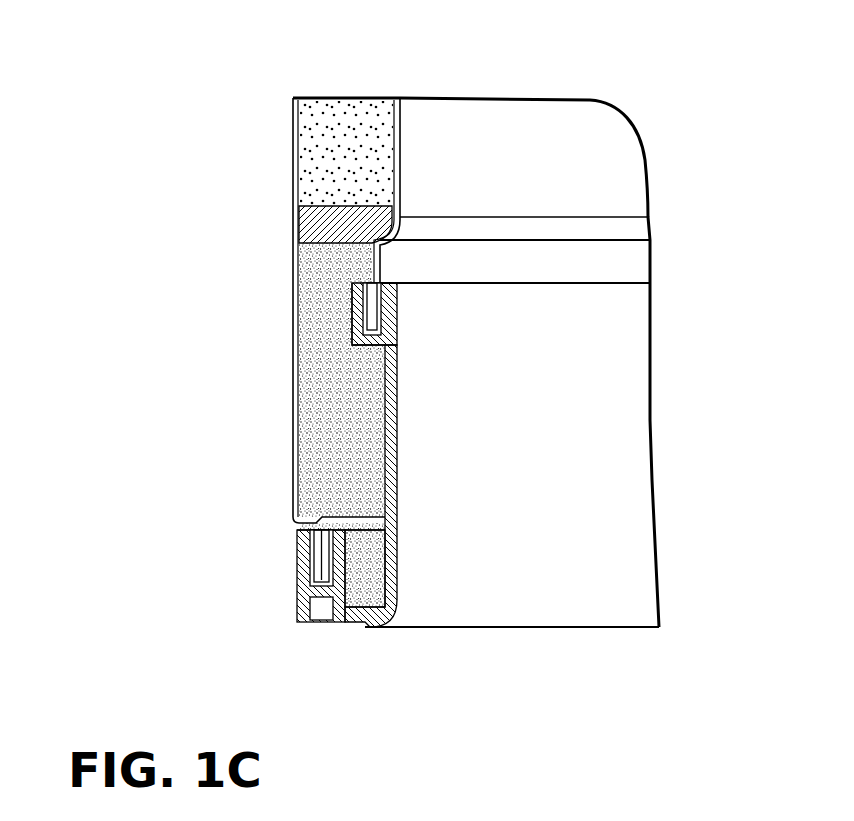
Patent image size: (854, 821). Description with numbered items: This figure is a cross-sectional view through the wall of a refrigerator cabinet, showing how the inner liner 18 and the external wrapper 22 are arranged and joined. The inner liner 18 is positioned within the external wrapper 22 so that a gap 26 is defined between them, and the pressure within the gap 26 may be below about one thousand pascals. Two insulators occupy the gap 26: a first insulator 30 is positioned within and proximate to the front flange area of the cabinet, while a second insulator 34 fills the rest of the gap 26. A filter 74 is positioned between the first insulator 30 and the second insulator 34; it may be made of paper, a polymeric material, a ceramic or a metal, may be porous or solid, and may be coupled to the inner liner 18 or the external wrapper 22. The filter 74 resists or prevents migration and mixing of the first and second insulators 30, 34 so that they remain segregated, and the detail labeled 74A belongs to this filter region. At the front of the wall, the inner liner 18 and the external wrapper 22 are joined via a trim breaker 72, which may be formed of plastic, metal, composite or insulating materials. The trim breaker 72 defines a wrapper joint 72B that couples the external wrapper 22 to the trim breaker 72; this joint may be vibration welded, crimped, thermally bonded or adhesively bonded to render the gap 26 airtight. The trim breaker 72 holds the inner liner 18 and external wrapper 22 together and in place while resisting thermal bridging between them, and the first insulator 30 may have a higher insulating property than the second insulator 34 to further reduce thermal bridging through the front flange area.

The inner liner 18 is at (400, 148).
The second insulator 34 is at (337, 150).
The external wrapper 22 is at (290, 236).
The filter 74 is at (325, 258).
The bracket channel 74A is at (352, 318).
The first insulator 30 is at (330, 422).
The gap 26 is at (340, 475).
The trim breaker 72 is at (331, 618).
The wrapper joint 72B is at (322, 557).